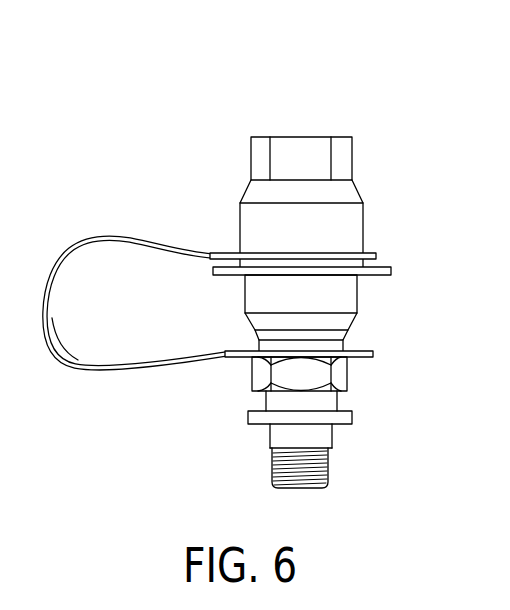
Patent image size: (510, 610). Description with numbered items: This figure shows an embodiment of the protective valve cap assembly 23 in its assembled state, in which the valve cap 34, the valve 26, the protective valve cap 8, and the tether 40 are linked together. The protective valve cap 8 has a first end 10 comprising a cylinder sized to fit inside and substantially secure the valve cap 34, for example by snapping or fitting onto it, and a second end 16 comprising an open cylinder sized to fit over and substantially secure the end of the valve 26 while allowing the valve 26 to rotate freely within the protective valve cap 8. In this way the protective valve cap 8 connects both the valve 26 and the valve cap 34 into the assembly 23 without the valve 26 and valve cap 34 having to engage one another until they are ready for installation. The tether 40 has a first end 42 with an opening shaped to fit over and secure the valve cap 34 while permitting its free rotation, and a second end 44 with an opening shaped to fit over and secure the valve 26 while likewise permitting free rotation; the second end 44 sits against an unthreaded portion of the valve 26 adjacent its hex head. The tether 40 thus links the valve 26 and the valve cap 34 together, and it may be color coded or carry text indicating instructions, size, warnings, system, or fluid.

The protective valve cap assembly 23 is at (216, 113).
The valve cap 34 is at (322, 137).
The first end of the tether 42 is at (212, 252).
The first end of the protective valve cap 10 is at (383, 263).
The protective valve cap 8 is at (358, 298).
The second end of the protective valve cap 16 is at (358, 322).
The tether 40 is at (62, 348).
The second end of the tether 44 is at (240, 358).
The valve 26 is at (330, 458).